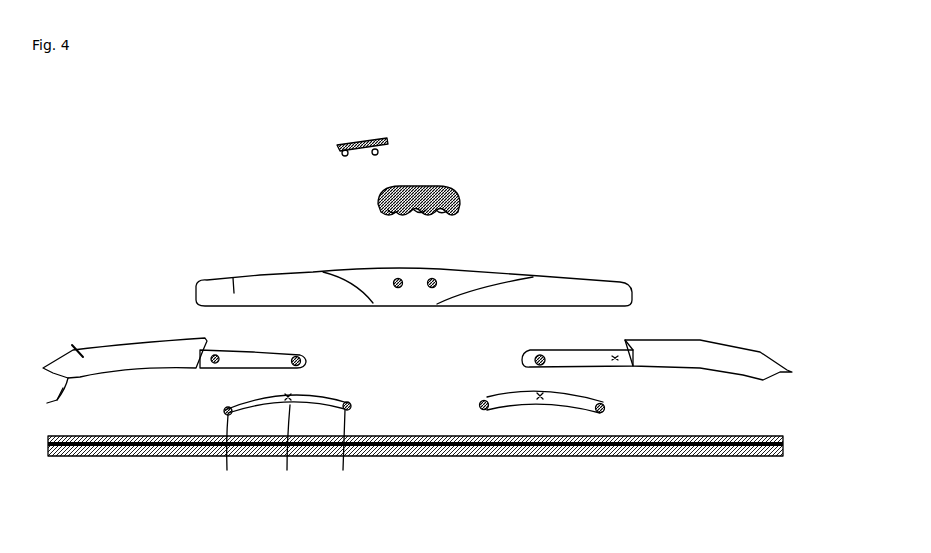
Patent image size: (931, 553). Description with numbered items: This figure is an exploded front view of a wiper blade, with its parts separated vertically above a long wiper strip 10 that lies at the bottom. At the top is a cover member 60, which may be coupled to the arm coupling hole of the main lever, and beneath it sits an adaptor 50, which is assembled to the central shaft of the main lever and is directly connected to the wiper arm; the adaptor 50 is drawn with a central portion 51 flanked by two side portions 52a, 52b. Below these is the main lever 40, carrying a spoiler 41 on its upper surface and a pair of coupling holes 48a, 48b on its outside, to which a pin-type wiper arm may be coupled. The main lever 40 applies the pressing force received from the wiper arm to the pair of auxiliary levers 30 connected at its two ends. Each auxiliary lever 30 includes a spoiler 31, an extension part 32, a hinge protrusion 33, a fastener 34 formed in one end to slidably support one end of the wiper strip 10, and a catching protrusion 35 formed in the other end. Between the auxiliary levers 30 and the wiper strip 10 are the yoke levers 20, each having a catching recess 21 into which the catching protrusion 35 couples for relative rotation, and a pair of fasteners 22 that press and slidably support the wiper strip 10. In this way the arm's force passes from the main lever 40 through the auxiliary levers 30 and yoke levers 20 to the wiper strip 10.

The wiper strip 10 is at (120, 459).
The yoke lever 20 is at (412, 424).
The catching recess 21 is at (288, 449).
The fastener 22 is at (286, 451).
The auxiliary lever 30 is at (413, 351).
The spoiler 31 is at (67, 343).
The extension part 32 is at (258, 361).
The hinge protrusion 33 is at (203, 364).
The fastener 34 is at (49, 400).
The catching protrusion 35 is at (306, 361).
The main lever 40 is at (414, 285).
The spoiler 41 is at (230, 273).
The coupling hole 48a is at (400, 289).
The coupling hole 48b is at (434, 289).
The adaptor 50 is at (430, 191).
The central lobe of knob 51 is at (420, 216).
The side lobe of knob 52a is at (398, 217).
The side lobe of knob 52b is at (441, 216).
The cover member 60 is at (370, 136).